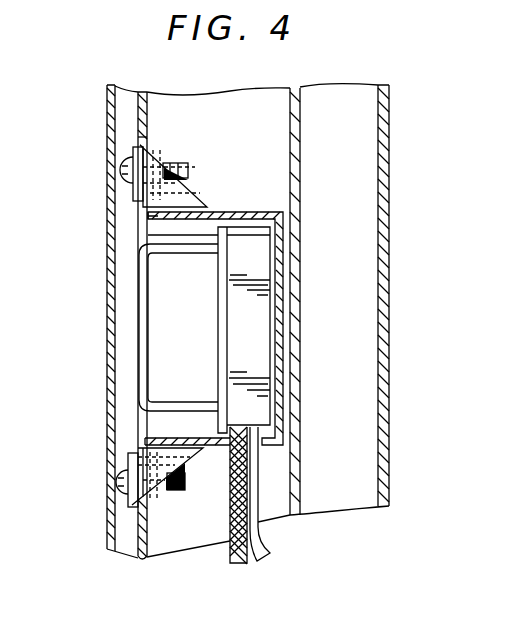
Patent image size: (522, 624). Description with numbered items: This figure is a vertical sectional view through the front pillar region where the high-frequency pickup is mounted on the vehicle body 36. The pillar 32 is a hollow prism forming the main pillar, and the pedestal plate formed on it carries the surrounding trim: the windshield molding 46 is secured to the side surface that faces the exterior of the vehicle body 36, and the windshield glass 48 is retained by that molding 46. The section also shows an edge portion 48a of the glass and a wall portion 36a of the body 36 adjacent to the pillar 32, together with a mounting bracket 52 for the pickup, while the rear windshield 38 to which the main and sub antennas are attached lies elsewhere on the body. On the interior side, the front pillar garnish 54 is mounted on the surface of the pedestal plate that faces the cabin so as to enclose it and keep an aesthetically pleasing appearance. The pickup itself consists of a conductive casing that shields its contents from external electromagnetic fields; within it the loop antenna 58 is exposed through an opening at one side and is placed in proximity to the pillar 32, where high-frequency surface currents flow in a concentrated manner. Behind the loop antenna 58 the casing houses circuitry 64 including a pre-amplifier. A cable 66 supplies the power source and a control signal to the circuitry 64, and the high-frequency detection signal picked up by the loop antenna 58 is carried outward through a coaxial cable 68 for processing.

The pillar 32 is at (285, 281).
The vehicle body 36 is at (142, 557).
The wall section 36a is at (150, 122).
The rear windshield 38 is at (388, 442).
The windshield molding 46 is at (106, 352).
The windshield glass 48 is at (248, 212).
The bracket flange 48a is at (150, 216).
The upper mounting bracket 52 is at (188, 195).
The front pillar garnish 54 is at (193, 482).
The loop antenna 58 is at (148, 310).
The circuitry 64 is at (258, 314).
The cable 66 is at (265, 538).
The coaxial cable 68 is at (229, 548).